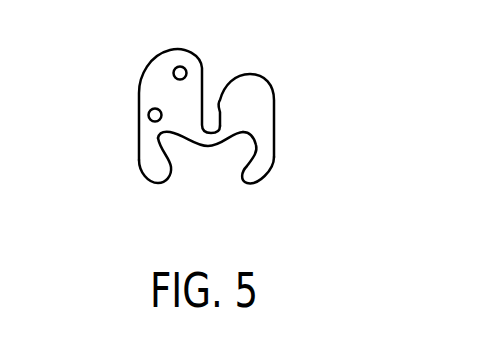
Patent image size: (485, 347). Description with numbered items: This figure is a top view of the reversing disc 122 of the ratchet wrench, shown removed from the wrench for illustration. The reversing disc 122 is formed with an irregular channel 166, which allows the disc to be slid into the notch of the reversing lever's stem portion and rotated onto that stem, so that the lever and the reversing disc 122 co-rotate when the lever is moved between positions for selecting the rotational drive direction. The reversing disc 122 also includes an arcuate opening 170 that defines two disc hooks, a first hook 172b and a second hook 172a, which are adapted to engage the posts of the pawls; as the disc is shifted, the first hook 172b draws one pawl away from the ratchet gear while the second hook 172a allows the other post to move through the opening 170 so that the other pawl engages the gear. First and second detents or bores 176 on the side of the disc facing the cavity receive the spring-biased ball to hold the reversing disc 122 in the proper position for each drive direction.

The reversing disc 122 is at (208, 129).
The irregular channel 166 is at (203, 120).
The arcuate opening 170 is at (209, 163).
The second hook 172a is at (254, 168).
The first hook 172b is at (158, 182).
The detents 176 is at (173, 67).